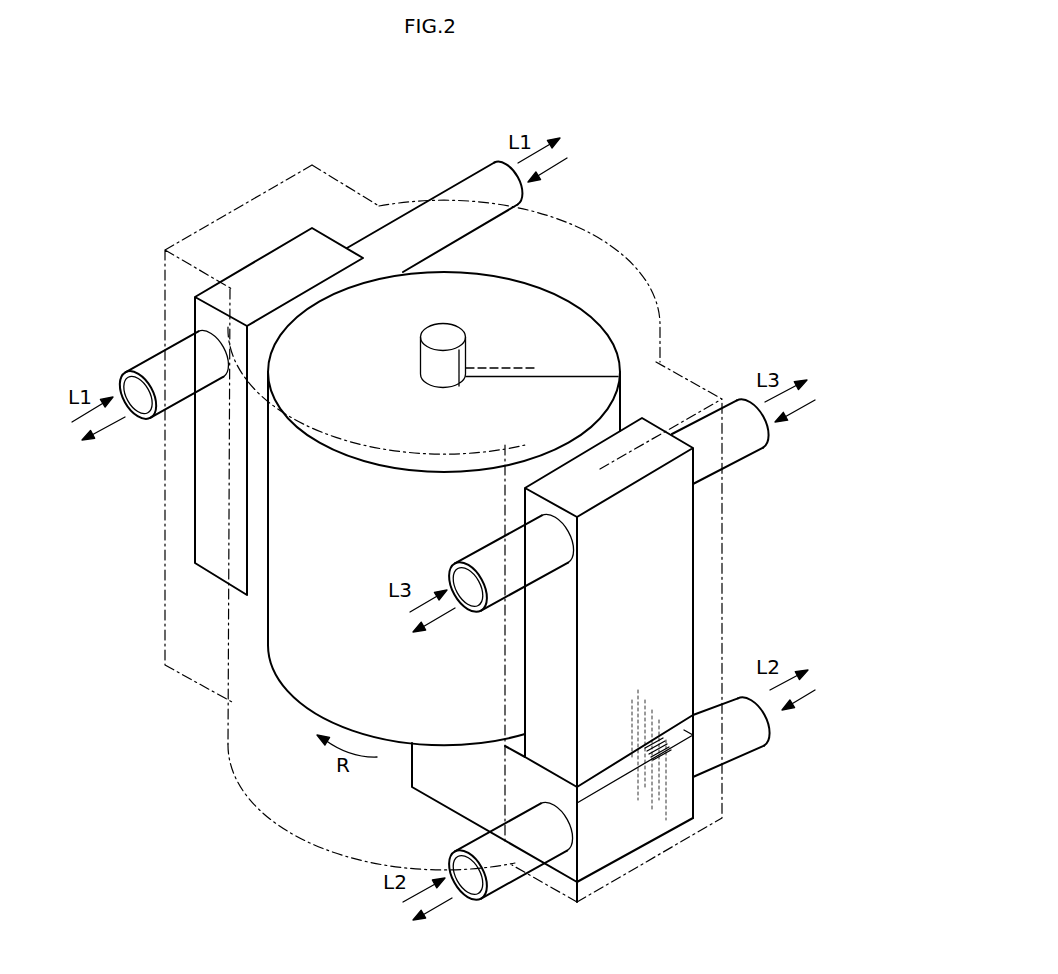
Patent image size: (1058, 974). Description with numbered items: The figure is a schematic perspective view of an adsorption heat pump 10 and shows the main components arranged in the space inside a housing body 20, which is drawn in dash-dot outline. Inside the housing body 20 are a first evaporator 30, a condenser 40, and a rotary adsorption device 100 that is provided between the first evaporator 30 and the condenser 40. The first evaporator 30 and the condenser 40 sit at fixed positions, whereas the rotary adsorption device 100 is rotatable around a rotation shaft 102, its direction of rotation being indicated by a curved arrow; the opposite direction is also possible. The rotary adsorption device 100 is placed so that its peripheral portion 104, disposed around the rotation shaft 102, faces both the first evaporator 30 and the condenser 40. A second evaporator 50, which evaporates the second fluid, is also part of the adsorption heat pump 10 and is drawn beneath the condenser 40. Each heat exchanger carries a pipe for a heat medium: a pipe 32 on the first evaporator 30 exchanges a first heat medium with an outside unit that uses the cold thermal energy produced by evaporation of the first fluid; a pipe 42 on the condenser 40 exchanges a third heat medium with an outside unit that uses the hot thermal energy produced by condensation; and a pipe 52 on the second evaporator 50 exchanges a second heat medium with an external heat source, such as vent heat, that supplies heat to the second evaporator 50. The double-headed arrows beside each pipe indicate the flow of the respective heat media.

The adsorption heat pump 10 is at (692, 95).
The housing body 20 is at (632, 250).
The first evaporator 30 is at (265, 273).
The pipe 32 is at (152, 368).
The condenser 40 is at (683, 582).
The pipe 42 is at (737, 413).
The second evaporator 50 is at (635, 842).
The pipe 52 is at (502, 872).
The rotary adsorption device 100 is at (437, 462).
The rotation shaft 102 is at (452, 337).
The peripheral portion 104 is at (310, 680).